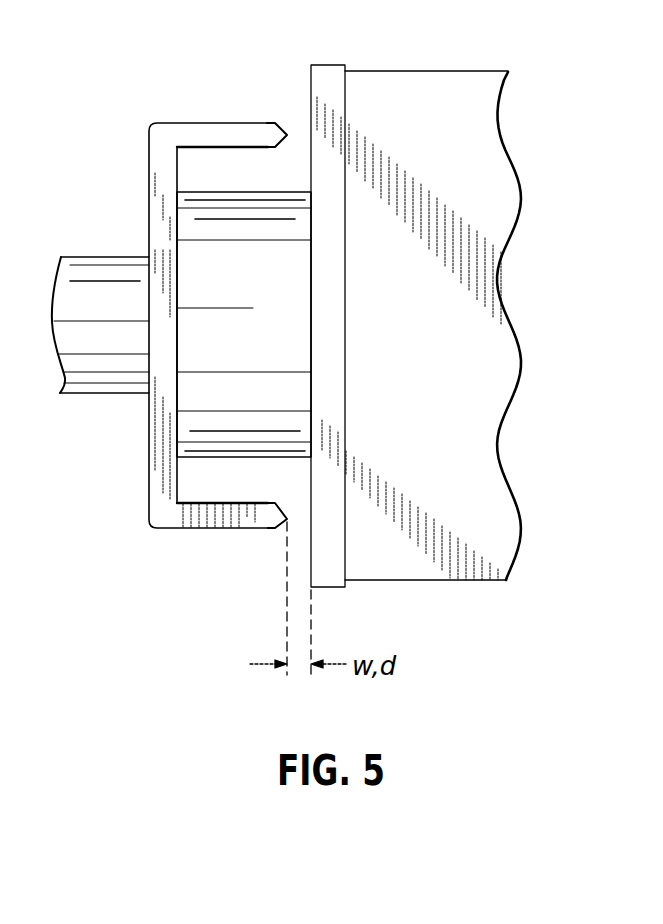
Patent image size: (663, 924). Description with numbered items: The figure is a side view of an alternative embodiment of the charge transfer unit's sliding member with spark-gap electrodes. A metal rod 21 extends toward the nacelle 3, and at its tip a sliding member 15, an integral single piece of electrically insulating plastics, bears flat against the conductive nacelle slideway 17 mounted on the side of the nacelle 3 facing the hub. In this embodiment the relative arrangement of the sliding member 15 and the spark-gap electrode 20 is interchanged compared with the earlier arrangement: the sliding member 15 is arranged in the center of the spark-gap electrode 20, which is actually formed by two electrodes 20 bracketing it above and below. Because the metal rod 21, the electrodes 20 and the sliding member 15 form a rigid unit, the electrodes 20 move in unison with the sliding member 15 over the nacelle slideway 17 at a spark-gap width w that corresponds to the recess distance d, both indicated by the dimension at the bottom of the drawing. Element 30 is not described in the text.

The nacelle 3 is at (506, 190).
The sliding member 15 is at (190, 389).
The nacelle slideway 17 is at (332, 70).
The spark-gap electrode 20 is at (229, 131).
The metal rod 21 is at (76, 290).
The clip 30 is at (157, 174).